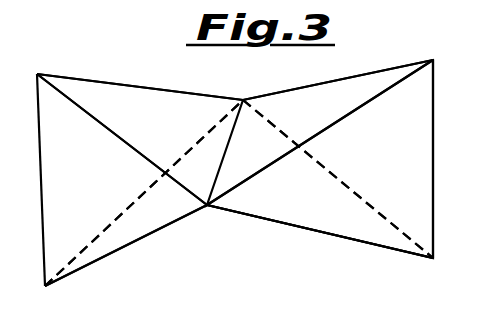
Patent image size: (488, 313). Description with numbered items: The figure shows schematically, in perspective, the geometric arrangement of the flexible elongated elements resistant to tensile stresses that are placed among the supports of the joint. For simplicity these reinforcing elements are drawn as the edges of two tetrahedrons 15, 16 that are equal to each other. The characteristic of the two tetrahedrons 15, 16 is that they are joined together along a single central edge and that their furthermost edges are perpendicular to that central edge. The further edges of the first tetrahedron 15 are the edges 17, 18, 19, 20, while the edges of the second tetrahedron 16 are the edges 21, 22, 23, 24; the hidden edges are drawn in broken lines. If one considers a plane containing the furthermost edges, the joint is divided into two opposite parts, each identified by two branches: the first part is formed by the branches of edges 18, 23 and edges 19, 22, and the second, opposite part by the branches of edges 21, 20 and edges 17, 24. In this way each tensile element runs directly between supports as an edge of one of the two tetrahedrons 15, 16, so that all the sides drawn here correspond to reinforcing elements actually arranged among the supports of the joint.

The tetrahedron 15 is at (150, 120).
The tetrahedron 16 is at (329, 197).
The edge of tetrahedron 17 is at (105, 81).
The edge of tetrahedron 18 is at (97, 121).
The edge of tetrahedron 19 is at (128, 245).
The edge of tetrahedron 20 is at (145, 196).
The edge of tetrahedron 21 is at (362, 74).
The edge of tetrahedron 22 is at (283, 157).
The edge of tetrahedron 23 is at (302, 228).
The edge of tetrahedron 24 is at (368, 202).